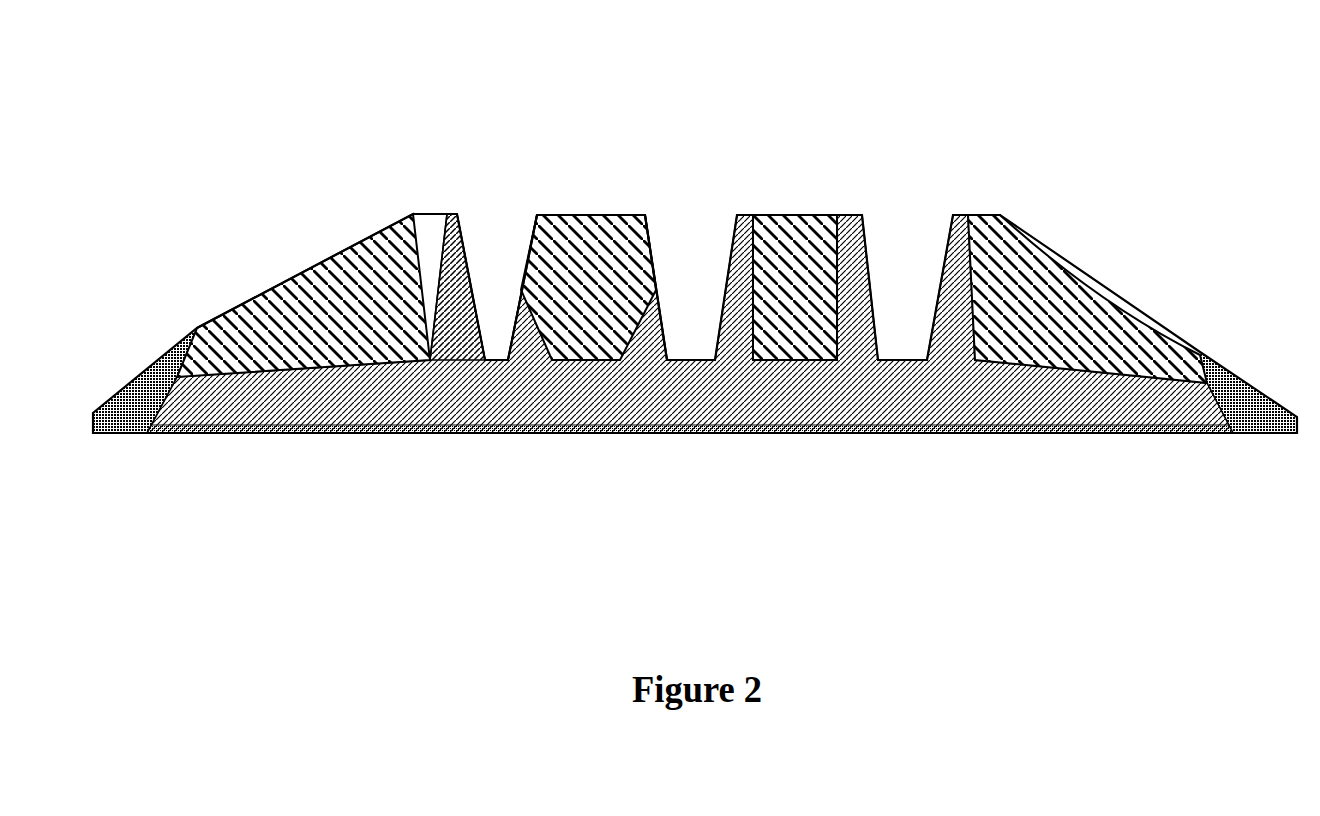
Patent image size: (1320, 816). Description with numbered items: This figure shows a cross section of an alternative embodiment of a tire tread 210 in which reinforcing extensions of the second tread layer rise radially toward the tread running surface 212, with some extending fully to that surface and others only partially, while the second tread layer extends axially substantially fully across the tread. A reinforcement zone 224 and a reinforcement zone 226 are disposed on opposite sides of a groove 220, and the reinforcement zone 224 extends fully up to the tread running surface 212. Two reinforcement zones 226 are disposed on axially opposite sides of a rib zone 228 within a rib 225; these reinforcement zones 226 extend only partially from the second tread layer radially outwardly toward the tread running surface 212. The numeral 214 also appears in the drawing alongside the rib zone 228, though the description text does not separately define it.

The tire tread 210 is at (695, 275).
The tread running surface 212 is at (618, 213).
The rib insert 214 is at (549, 201).
The groove 220 is at (517, 252).
The reinforcement zone 224 is at (450, 227).
The rib 225 is at (587, 203).
The reinforcement zones 226 is at (530, 327).
The rib zone 228 is at (562, 240).